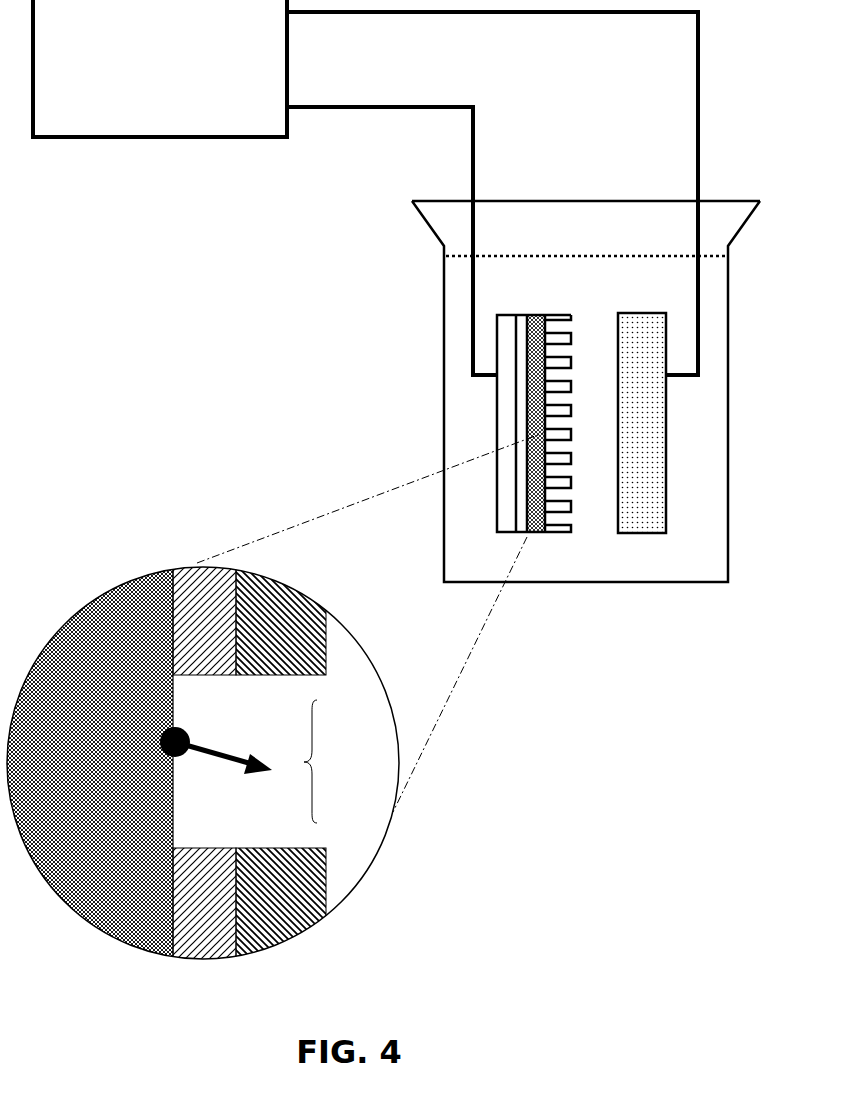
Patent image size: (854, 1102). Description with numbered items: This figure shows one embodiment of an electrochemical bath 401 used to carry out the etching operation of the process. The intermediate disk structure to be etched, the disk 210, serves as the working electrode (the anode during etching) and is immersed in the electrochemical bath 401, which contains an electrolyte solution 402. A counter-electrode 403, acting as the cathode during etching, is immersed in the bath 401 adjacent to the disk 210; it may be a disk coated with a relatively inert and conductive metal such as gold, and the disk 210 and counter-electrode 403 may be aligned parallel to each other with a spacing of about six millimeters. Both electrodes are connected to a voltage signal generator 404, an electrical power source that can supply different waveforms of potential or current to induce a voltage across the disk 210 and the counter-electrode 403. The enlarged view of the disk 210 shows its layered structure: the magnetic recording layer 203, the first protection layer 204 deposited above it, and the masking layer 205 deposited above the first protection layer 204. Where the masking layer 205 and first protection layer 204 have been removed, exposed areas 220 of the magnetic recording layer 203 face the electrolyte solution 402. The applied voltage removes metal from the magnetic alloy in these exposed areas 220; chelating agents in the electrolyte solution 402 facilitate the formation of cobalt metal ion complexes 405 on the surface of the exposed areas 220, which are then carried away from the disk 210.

The voltage signal generator 404 is at (92, 142).
The electrochemical bath 401 is at (432, 237).
The electrolyte solution 402 is at (712, 432).
The disk 210 is at (527, 310).
The counter-electrode 403 is at (642, 423).
The magnetic recording layer 203 is at (86, 765).
The first protection layer 204 is at (207, 587).
The masking layer 205 is at (270, 593).
The cobalt metal ion complexes 405 is at (183, 728).
The exposed areas 220 is at (322, 762).